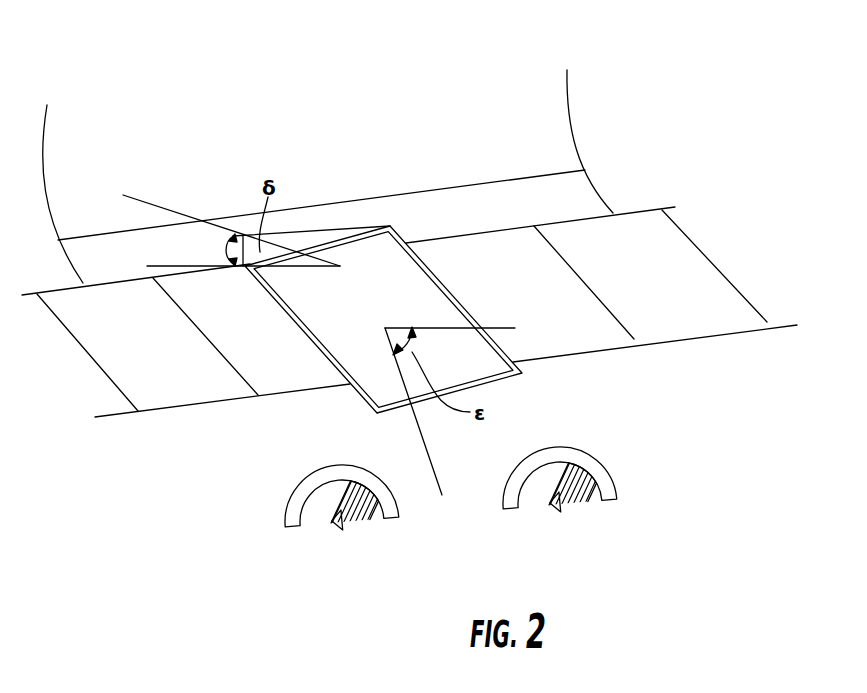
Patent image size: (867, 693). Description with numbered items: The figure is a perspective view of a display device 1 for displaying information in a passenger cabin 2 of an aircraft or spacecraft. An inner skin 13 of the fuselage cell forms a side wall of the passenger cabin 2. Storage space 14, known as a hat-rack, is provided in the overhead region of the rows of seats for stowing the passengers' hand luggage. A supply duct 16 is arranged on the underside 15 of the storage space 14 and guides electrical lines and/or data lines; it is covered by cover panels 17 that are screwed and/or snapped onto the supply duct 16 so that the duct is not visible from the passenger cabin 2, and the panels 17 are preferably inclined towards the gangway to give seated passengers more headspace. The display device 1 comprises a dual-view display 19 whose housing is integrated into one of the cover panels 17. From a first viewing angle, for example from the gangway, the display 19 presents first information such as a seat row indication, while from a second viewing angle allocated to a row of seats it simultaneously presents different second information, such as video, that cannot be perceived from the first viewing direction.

The display device 1 is at (172, 73).
The passenger cabin 2 is at (180, 465).
The inner skin 13 is at (627, 450).
The storage space 14 is at (333, 133).
The underside 15 is at (115, 250).
The supply duct 16 is at (748, 263).
The cover panels 17 is at (513, 238).
The display 19 is at (357, 342).